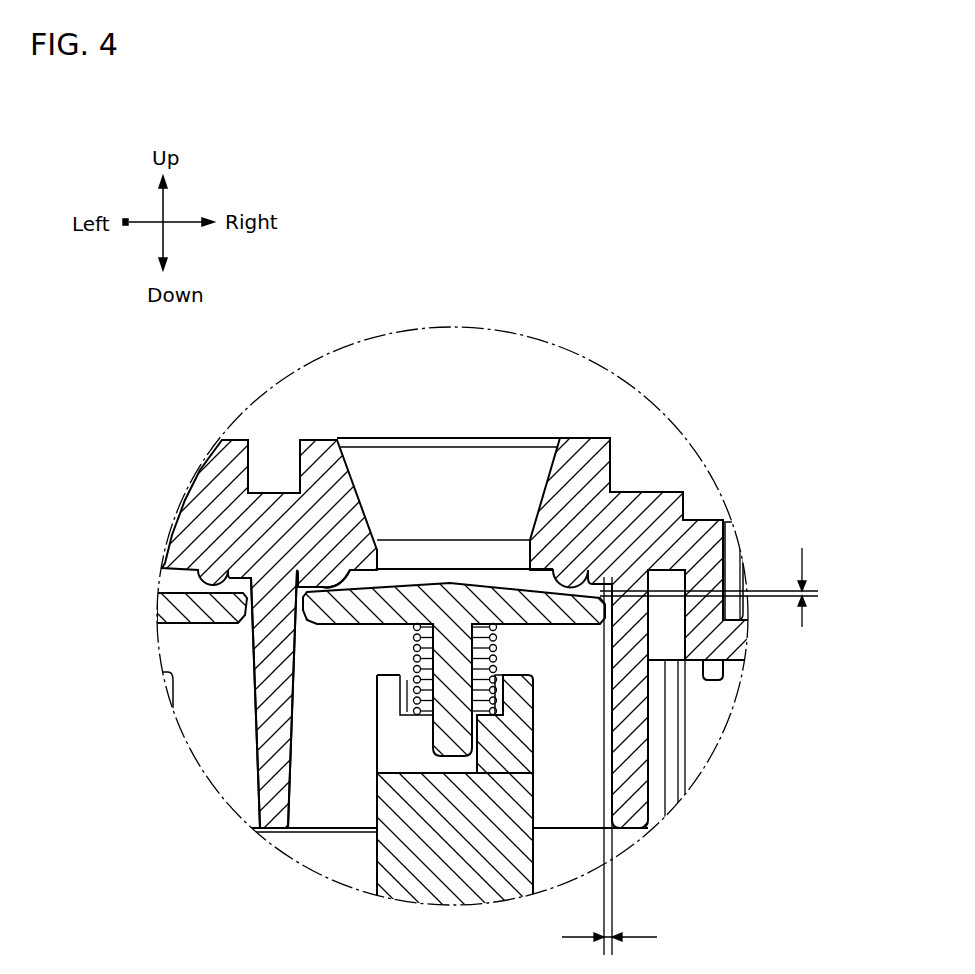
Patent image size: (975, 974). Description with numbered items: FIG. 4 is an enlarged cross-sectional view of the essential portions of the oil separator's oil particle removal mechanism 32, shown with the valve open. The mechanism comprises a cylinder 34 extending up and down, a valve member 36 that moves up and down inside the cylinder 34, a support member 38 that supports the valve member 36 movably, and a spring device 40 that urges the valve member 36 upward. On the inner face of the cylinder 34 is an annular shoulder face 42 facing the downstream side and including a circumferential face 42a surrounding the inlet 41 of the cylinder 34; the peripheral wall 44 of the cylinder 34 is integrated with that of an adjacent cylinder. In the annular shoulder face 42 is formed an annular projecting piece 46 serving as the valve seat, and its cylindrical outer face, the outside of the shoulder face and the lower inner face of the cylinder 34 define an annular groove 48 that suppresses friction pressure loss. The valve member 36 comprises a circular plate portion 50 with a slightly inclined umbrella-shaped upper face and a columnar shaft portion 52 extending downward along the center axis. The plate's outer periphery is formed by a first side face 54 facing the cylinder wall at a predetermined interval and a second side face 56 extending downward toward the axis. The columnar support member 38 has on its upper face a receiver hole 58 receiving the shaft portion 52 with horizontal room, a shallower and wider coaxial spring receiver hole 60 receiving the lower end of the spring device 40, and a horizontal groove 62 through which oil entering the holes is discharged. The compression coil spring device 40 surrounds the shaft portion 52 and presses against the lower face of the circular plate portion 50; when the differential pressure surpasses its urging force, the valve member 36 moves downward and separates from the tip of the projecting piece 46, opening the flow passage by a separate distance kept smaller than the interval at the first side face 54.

The oil particle removal mechanism 32 is at (525, 372).
The cylinder 34 is at (298, 800).
The valve member 36 is at (340, 626).
The support member 38 is at (377, 863).
The spring device 40 is at (413, 660).
The inlet 41 is at (483, 555).
The annular shoulder face 42 is at (630, 553).
The circumferential face 42a is at (366, 573).
The peripheral wall 44 is at (272, 727).
The projecting piece 46 is at (340, 585).
The annular groove 48 is at (285, 586).
The circular plate portion 50 is at (565, 610).
The shaft portion 52 is at (497, 645).
The first side face 54 is at (614, 598).
The second side face 56 is at (602, 613).
The receiver hole 58 is at (468, 757).
The spring receiver hole 60 is at (507, 682).
The horizontal groove 62 is at (377, 762).